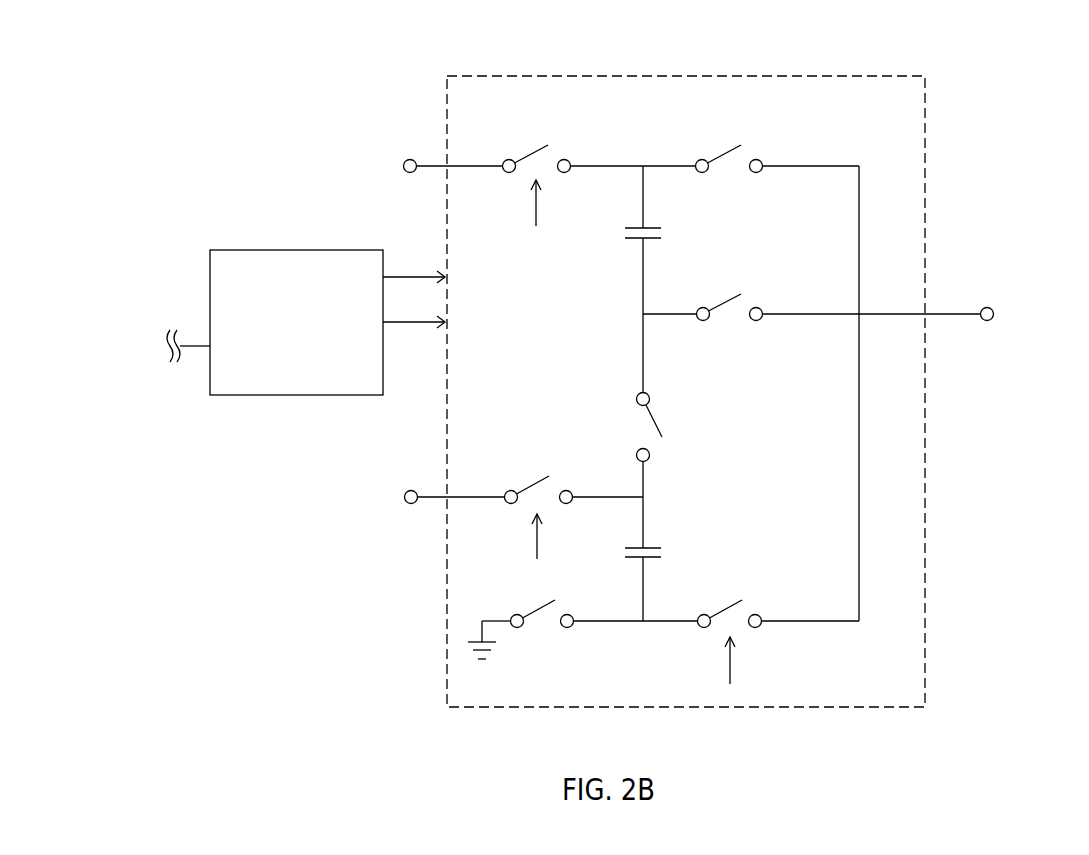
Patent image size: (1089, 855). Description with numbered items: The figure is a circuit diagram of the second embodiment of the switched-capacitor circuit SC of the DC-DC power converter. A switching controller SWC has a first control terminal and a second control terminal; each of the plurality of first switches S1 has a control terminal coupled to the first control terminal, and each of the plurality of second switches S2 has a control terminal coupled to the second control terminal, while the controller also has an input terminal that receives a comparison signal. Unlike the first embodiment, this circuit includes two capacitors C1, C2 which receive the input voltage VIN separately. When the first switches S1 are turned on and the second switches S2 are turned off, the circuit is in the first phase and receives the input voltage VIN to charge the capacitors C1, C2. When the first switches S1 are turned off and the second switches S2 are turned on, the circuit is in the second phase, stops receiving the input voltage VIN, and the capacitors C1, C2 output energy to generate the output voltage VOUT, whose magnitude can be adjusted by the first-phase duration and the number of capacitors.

The switched-capacitor circuit SC is at (254, 118).
The switching controller SWC is at (240, 250).
The input voltage VIN is at (425, 332).
The output voltage VOUT is at (910, 290).
The first switches S1 is at (633, 366).
The second switches S2 is at (637, 366).
The capacitor C1 is at (624, 279).
The capacitor C2 is at (666, 542).